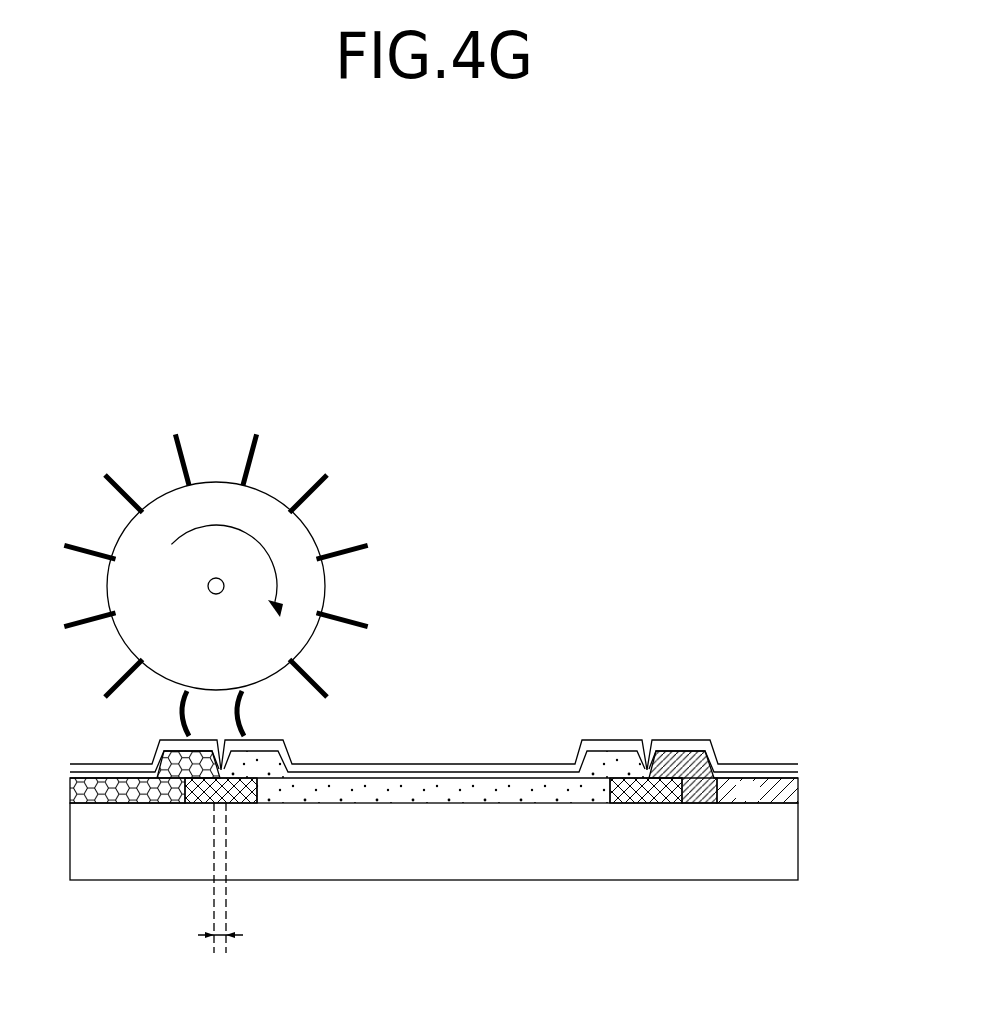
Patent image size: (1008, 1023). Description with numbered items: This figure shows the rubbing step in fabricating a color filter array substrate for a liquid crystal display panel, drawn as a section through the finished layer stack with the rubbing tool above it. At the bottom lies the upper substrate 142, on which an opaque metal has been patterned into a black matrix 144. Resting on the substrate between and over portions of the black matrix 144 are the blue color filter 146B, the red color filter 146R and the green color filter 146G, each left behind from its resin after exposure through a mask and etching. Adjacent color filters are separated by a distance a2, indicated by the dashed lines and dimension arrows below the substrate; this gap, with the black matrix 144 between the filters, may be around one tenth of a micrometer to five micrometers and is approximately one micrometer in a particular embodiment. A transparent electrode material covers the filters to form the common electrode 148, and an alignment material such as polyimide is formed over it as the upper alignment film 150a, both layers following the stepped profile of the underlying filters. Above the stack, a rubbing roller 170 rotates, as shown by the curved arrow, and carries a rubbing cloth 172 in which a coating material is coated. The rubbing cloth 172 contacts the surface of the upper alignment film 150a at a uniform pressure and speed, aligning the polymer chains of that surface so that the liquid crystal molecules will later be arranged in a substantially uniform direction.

The rubbing roller 170 is at (312, 532).
The rubbing cloth 172 is at (370, 545).
The upper substrate 142 is at (798, 840).
The black matrix 144 is at (632, 803).
The blue color filter 146B is at (150, 797).
The red color filter 146R is at (390, 792).
The green color filter 146G is at (768, 798).
The common electrode 148 is at (798, 773).
The upper alignment film 150a is at (798, 766).
The distance a2 is at (220, 896).